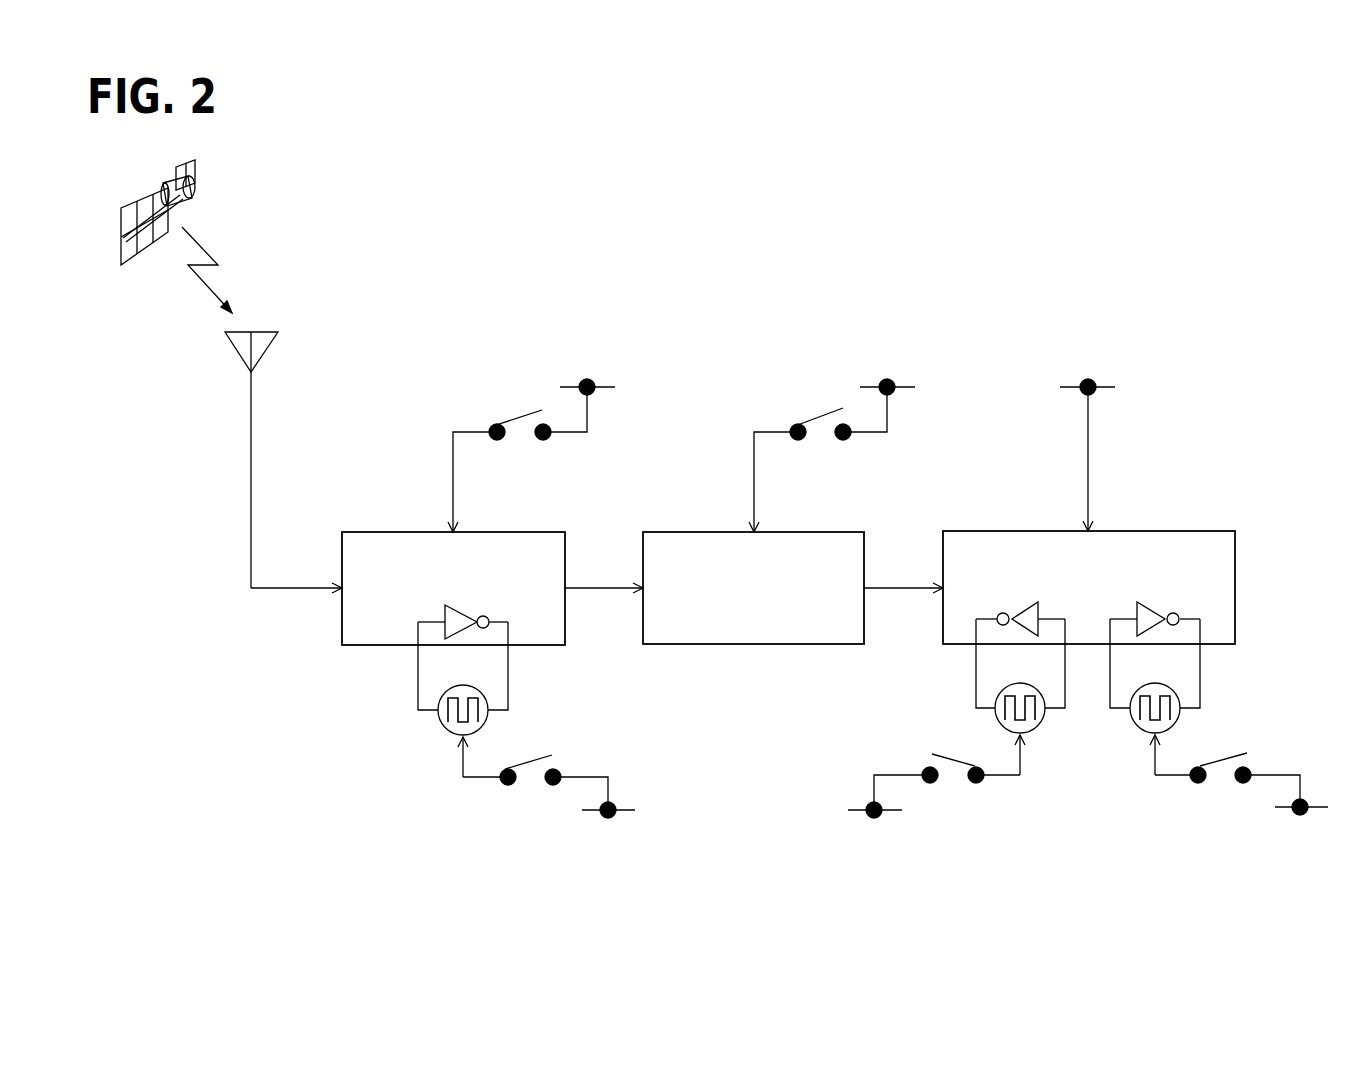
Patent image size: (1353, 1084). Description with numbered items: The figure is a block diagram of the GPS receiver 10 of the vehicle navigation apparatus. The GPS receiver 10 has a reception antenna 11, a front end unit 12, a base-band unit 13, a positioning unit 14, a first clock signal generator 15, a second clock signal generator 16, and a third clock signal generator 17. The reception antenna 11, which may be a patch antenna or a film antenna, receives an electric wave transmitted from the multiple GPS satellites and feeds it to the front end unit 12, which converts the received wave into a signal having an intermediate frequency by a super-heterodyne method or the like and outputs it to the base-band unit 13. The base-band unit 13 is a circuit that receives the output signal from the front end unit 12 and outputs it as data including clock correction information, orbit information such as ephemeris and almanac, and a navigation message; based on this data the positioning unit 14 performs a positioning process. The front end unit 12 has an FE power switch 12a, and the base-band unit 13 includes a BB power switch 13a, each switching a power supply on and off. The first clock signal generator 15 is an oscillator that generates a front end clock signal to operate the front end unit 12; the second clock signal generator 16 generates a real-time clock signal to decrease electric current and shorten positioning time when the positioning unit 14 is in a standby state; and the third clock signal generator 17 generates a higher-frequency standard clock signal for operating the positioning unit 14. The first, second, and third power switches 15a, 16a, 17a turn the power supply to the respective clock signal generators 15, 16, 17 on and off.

The GPS receiver 10 is at (823, 262).
The reception antenna 11 is at (267, 333).
The front end unit 12 is at (385, 532).
The FE power switch 12a is at (522, 413).
The base-band unit 13 is at (688, 532).
The BB power switch 13a is at (822, 413).
The positioning unit 14 is at (988, 531).
The first clock signal generator 15 is at (448, 728).
The first power switch 15a is at (532, 758).
The second clock signal generator 16 is at (1040, 733).
The second power switch 16a is at (950, 755).
The third clock signal generator 17 is at (1135, 728).
The third power switch 17a is at (1225, 756).